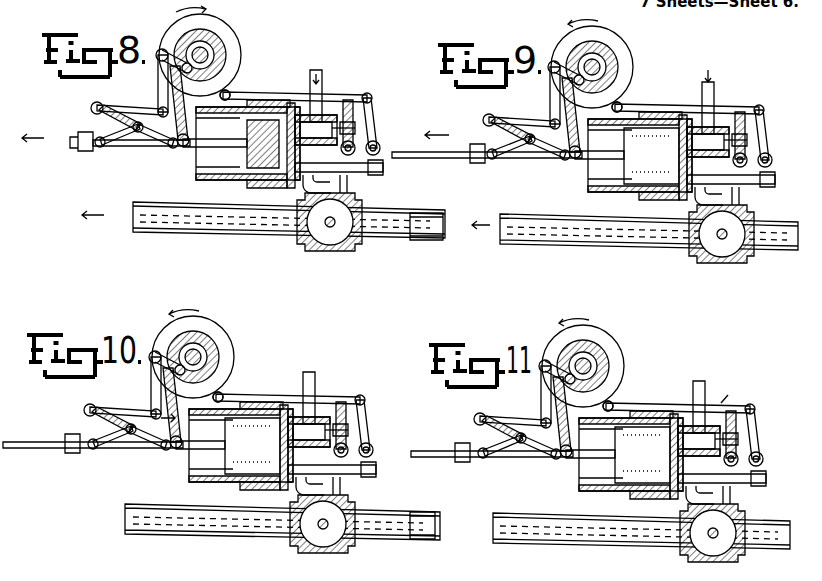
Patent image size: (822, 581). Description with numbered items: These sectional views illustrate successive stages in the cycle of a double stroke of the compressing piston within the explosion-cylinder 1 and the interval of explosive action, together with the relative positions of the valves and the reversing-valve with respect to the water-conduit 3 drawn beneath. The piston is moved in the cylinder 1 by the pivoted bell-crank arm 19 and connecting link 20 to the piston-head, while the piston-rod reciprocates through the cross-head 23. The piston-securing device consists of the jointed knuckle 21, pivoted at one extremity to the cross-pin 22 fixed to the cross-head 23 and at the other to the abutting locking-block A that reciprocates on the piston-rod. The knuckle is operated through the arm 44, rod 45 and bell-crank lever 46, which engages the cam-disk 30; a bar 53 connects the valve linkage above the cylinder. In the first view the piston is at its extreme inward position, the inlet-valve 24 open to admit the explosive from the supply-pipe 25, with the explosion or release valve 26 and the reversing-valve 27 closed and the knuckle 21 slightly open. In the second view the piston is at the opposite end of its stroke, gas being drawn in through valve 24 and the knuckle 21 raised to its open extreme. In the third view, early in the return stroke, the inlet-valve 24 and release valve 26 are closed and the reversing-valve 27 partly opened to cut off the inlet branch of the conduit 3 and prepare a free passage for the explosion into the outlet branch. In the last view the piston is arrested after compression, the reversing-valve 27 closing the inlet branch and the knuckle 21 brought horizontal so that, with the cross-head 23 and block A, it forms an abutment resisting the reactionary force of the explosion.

In FIG. 8, the explosion-cylinder 1 is at (275, 148).
In FIG. 9, the explosion-cylinder 1 is at (667, 159).
In FIG. 10, the explosion-cylinder 1 is at (268, 450).
In FIG. 11, the explosion-cylinder 1 is at (658, 459).
In FIG. 8, the rail 3 is at (289, 212).
In FIG. 9, the rail 3 is at (604, 221).
In FIG. 10, the rail 3 is at (282, 512).
In FIG. 11, the rail 3 is at (600, 533).
In FIG. 8, the pivoted bell-crank arm 19 is at (185, 104).
In FIG. 9, the pivoted bell-crank arm 19 is at (552, 116).
In FIG. 10, the pivoted bell-crank arm 19 is at (153, 406).
In FIG. 11, the pivoted bell-crank arm 19 is at (543, 415).
In FIG. 8, the connecting link 20 is at (224, 144).
In FIG. 9, the connecting link 20 is at (627, 156).
In FIG. 10, the connecting link 20 is at (222, 449).
In FIG. 11, the connecting link 20 is at (618, 455).
In FIG. 8, the jointed knuckle 21 is at (155, 129).
In FIG. 9, the jointed knuckle 21 is at (547, 147).
In FIG. 10, the jointed knuckle 21 is at (148, 437).
In FIG. 11, the jointed knuckle 21 is at (538, 446).
In FIG. 8, the cross-pin 22 is at (141, 151).
In FIG. 9, the cross-pin 22 is at (487, 155).
In FIG. 10, the cross-pin 22 is at (93, 456).
In FIG. 11, the cross-pin 22 is at (492, 454).
In FIG. 8, the cross-head 23 is at (81, 148).
In FIG. 9, the cross-head 23 is at (477, 153).
In FIG. 10, the cross-head 23 is at (67, 436).
In FIG. 11, the cross-head 23 is at (460, 461).
In FIG. 8, the inlet-valve 24 is at (291, 103).
In FIG. 9, the inlet-valve 24 is at (678, 138).
In FIG. 10, the inlet-valve 24 is at (272, 447).
In FIG. 11, the inlet-valve 24 is at (662, 456).
In FIG. 8, the supply-pipe 25 is at (322, 80).
In FIG. 9, the supply-pipe 25 is at (723, 114).
In FIG. 10, the supply-pipe 25 is at (323, 403).
In FIG. 11, the supply-pipe 25 is at (714, 413).
In FIG. 8, the explosion or release valve 26 is at (330, 150).
In FIG. 9, the explosion or release valve 26 is at (731, 170).
In FIG. 10, the explosion or release valve 26 is at (332, 460).
In FIG. 11, the explosion or release valve 26 is at (722, 469).
In FIG. 8, the reversing-valve 27 is at (348, 190).
In FIG. 9, the reversing-valve 27 is at (726, 225).
In FIG. 10, the reversing-valve 27 is at (327, 515).
In FIG. 11, the reversing-valve 27 is at (731, 524).
In FIG. 8, the cam-disk 30 is at (200, 57).
In FIG. 9, the cam-disk 30 is at (592, 73).
In FIG. 10, the cam-disk 30 is at (193, 359).
In FIG. 11, the cam-disk 30 is at (583, 365).
In FIG. 8, the arm 44 is at (103, 125).
In FIG. 9, the arm 44 is at (497, 138).
In FIG. 10, the arm 44 is at (106, 428).
In FIG. 11, the arm 44 is at (493, 437).
In FIG. 8, the rod 45 is at (127, 102).
In FIG. 9, the rod 45 is at (519, 114).
In FIG. 10, the rod 45 is at (120, 404).
In FIG. 11, the rod 45 is at (513, 426).
In FIG. 8, the bell-crank lever 46 is at (158, 85).
In FIG. 9, the bell-crank lever 46 is at (559, 98).
In FIG. 10, the bell-crank lever 46 is at (166, 385).
In FIG. 11, the bell-crank lever 46 is at (559, 394).
In FIG. 8, the connecting bar 53 is at (298, 111).
In FIG. 9, the connecting bar 53 is at (690, 124).
In FIG. 10, the connecting bar 53 is at (291, 410).
In FIG. 11, the connecting bar 53 is at (681, 427).
In FIG. 8, the locking-block A is at (186, 148).
In FIG. 9, the locking-block A is at (558, 168).
In FIG. 10, the locking-block A is at (167, 457).
In FIG. 11, the locking-block A is at (562, 467).